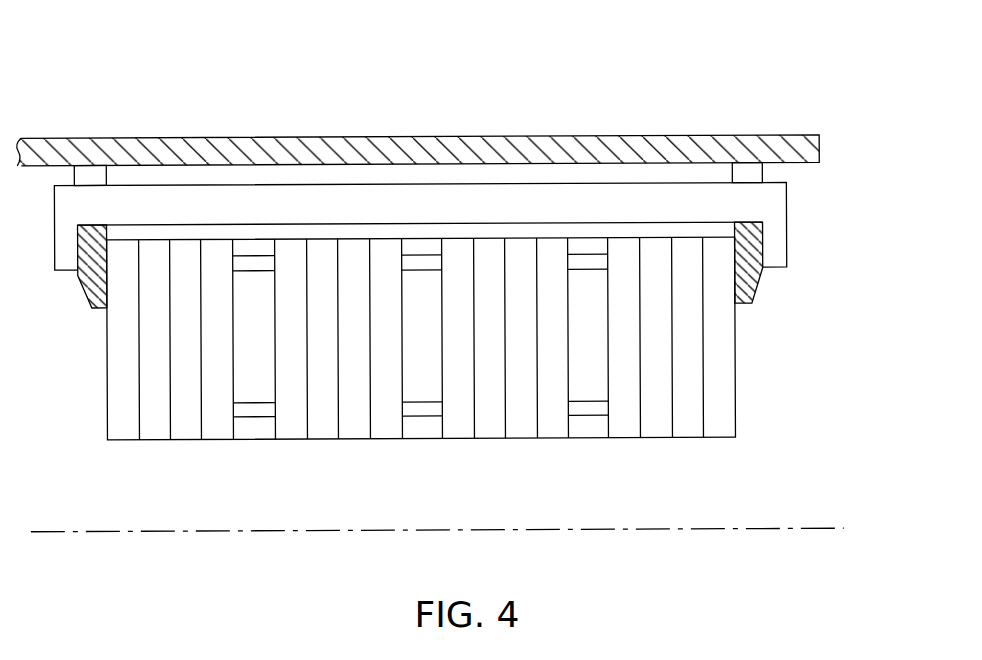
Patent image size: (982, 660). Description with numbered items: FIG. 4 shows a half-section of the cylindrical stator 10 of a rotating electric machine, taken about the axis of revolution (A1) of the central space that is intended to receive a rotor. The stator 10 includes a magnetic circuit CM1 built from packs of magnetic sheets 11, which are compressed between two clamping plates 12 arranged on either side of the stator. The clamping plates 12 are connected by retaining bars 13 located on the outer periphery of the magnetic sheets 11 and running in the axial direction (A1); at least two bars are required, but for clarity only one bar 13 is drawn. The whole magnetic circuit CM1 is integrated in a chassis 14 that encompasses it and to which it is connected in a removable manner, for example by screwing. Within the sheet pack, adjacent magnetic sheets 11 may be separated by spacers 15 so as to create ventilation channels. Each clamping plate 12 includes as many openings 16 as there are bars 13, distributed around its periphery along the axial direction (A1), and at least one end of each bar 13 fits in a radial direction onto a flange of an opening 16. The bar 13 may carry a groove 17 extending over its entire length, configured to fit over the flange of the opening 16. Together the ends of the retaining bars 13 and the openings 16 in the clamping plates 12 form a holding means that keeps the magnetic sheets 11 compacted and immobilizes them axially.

The stator 10 is at (733, 60).
The magnetic sheets 11 is at (107, 446).
The clamping plate 12 is at (87, 288).
The retaining bar 13 is at (452, 208).
The chassis 14 is at (603, 136).
The spacer 15 is at (252, 254).
The opening 16 is at (763, 170).
The groove 17 is at (765, 233).
The magnetic circuit CM1 is at (836, 182).
The axis of revolution A1 is at (466, 530).